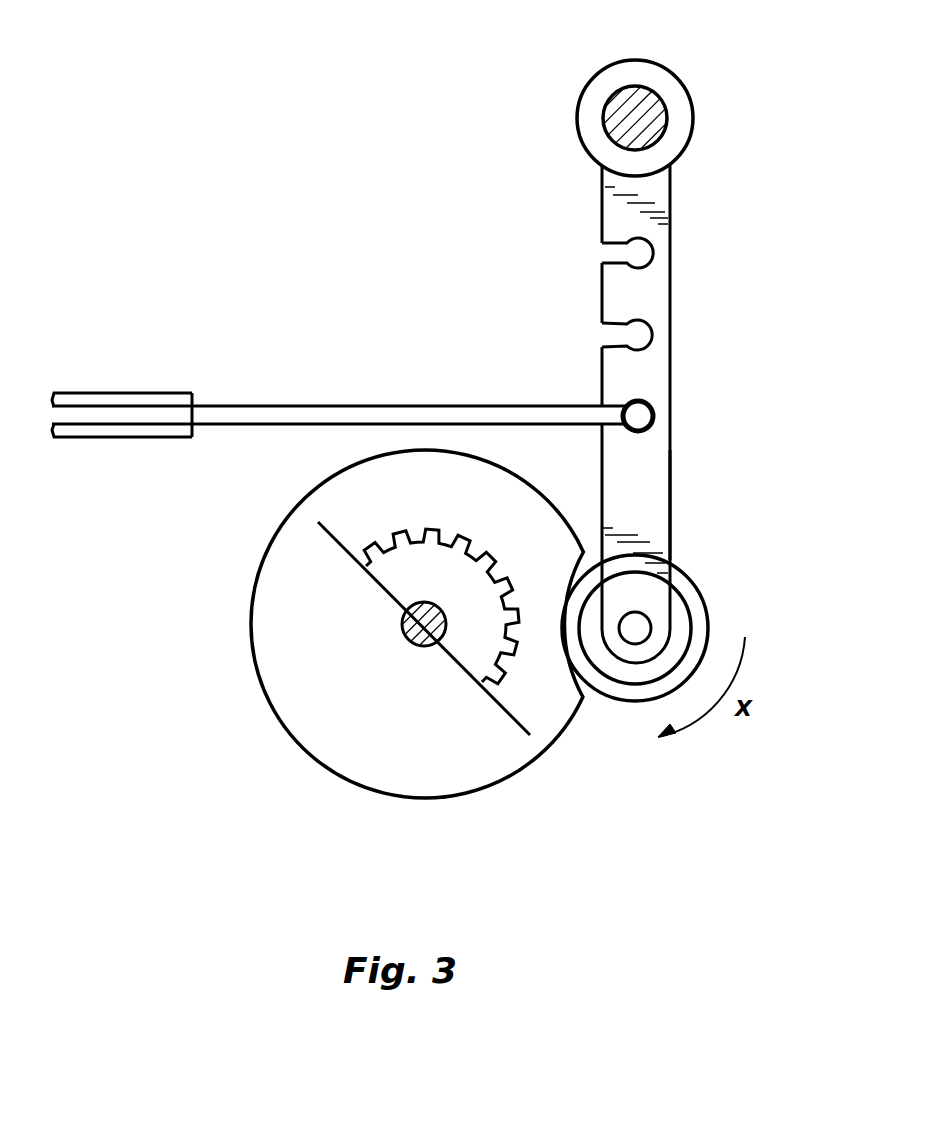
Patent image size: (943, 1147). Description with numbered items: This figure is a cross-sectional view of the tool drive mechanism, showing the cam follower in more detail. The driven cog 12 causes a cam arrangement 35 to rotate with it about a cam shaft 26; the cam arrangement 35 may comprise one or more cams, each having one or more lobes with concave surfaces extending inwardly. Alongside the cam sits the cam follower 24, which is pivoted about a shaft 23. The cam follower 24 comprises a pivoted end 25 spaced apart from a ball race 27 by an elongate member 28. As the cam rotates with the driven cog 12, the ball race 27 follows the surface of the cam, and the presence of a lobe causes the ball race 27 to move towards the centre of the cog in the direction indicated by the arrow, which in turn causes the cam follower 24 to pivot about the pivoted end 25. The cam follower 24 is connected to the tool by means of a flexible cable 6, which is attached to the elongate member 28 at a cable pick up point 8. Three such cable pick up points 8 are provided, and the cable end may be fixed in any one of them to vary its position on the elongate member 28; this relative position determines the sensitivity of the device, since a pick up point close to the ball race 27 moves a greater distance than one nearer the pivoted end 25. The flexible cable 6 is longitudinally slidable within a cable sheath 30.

The flexible cable 6 is at (352, 412).
The cable pick up point 8 is at (600, 405).
The driven cog 12 is at (473, 640).
The shaft 23 is at (640, 100).
The cam follower 24 is at (602, 210).
The pivoted end 25 is at (680, 133).
The cam shaft 26 is at (413, 622).
The ball race 27 is at (687, 602).
The elongate member 28 is at (640, 512).
The cable sheath 30 is at (108, 398).
The cam arrangement 35 is at (563, 727).